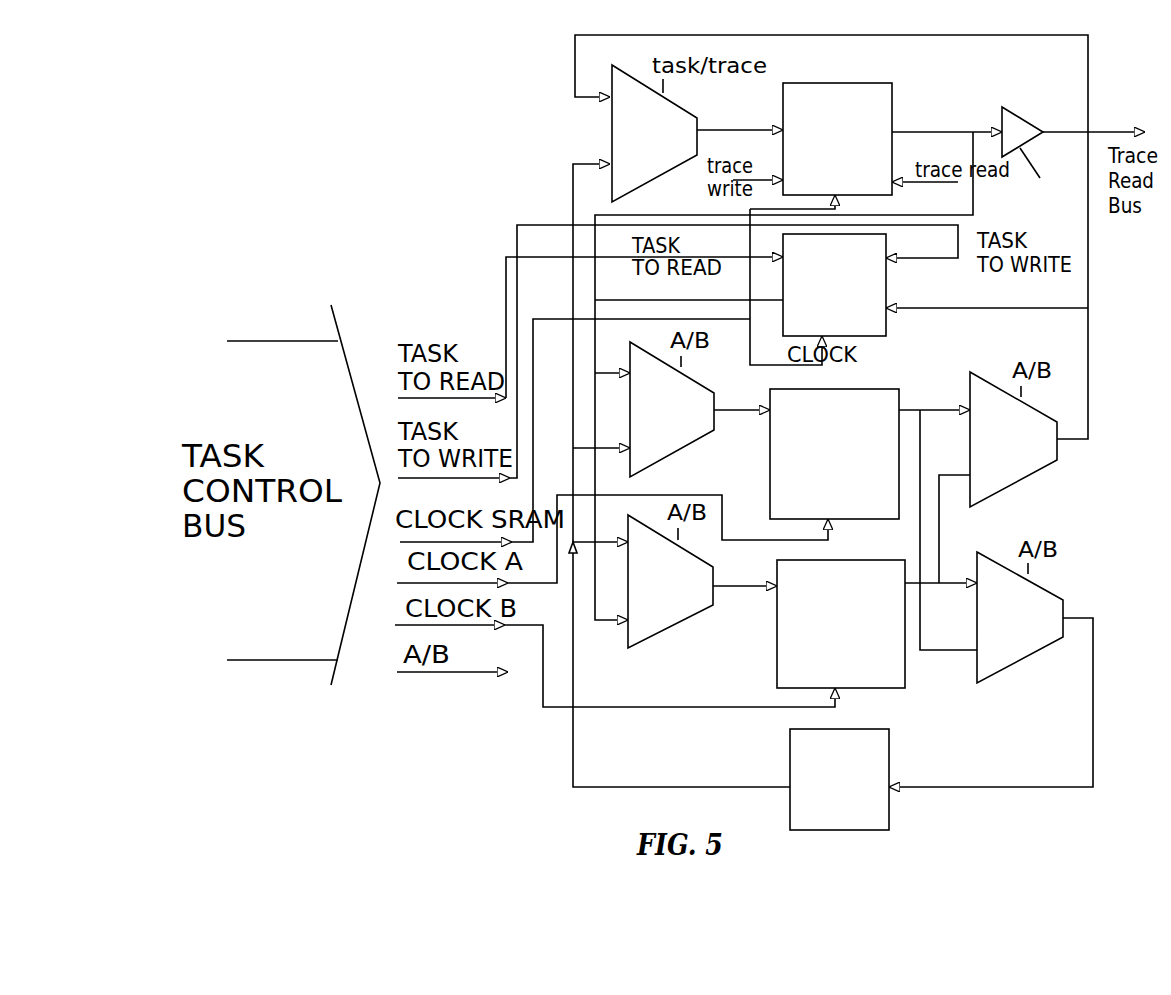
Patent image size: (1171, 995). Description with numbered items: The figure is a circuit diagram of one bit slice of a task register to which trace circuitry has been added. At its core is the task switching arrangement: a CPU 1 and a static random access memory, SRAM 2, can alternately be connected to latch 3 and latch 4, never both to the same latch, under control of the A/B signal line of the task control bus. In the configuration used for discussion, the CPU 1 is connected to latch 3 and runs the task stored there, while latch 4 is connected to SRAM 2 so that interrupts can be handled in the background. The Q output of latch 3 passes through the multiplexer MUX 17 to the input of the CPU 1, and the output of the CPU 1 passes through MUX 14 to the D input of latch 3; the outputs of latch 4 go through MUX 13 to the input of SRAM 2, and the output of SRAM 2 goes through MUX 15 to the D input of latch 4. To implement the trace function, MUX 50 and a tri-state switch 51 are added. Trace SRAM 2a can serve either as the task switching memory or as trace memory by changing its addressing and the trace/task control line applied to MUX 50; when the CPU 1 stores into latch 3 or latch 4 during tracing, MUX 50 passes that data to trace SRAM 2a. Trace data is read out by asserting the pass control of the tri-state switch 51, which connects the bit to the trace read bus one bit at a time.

The CPU 1 is at (876, 803).
The static random access memory (SRAM) 2 is at (880, 336).
The trace SRAM 2a is at (872, 97).
The latch 3 is at (777, 508).
The latch 4 is at (893, 675).
The multiplexer (MUX) 13 is at (1017, 467).
The multiplexer (MUX) 14 is at (675, 445).
The multiplexer (MUX) 15 is at (668, 620).
The multiplexer (MUX) 17 is at (1015, 653).
The MUX 50 is at (643, 165).
The tri-state switch 51 is at (1025, 112).